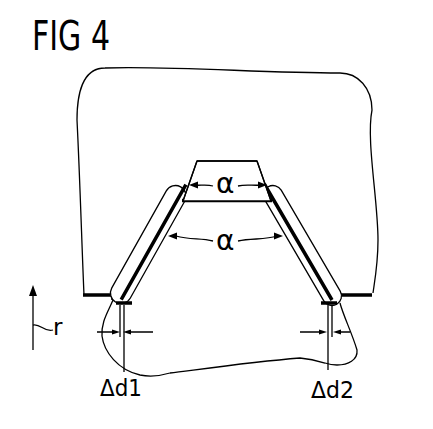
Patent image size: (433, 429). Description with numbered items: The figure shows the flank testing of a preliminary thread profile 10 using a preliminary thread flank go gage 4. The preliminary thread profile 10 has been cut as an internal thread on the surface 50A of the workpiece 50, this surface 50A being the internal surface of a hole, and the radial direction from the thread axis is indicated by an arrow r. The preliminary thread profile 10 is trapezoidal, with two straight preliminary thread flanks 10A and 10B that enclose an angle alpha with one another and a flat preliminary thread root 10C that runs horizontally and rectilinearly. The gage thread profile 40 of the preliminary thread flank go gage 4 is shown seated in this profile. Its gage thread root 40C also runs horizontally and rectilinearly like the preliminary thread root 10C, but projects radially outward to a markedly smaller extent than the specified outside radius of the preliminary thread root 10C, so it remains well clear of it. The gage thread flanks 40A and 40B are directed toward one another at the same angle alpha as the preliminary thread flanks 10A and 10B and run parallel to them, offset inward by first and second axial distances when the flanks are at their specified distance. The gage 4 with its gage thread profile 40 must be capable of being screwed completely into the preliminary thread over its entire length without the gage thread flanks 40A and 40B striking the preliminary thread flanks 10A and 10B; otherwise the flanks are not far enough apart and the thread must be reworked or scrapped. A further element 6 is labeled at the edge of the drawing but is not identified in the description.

The preliminary thread flank go gage 4 is at (227, 328).
The adjacent part 6 is at (432, 216).
The preliminary thread profile 10 is at (191, 158).
The preliminary thread flank 10A is at (158, 222).
The preliminary thread flank 10B is at (290, 214).
The preliminary thread root 10C is at (230, 160).
The gage thread profile 40 is at (227, 220).
The gage thread flank 40A is at (147, 265).
The gage thread flank 40B is at (362, 283).
The gage thread root 40C is at (250, 187).
The workpiece 50 is at (340, 117).
The surface of the workpiece 50A is at (363, 297).